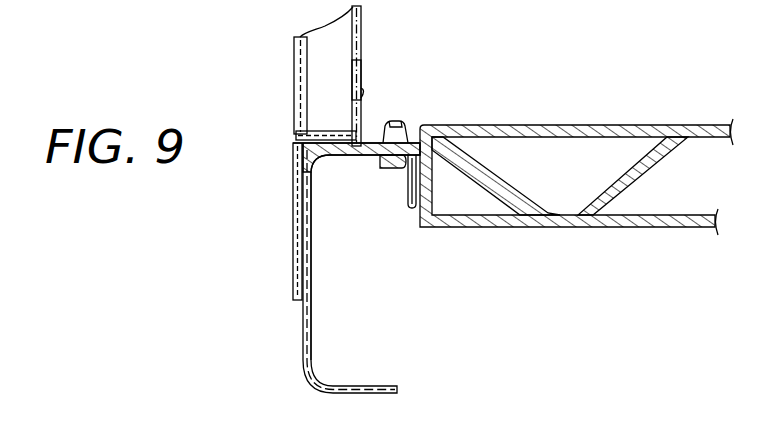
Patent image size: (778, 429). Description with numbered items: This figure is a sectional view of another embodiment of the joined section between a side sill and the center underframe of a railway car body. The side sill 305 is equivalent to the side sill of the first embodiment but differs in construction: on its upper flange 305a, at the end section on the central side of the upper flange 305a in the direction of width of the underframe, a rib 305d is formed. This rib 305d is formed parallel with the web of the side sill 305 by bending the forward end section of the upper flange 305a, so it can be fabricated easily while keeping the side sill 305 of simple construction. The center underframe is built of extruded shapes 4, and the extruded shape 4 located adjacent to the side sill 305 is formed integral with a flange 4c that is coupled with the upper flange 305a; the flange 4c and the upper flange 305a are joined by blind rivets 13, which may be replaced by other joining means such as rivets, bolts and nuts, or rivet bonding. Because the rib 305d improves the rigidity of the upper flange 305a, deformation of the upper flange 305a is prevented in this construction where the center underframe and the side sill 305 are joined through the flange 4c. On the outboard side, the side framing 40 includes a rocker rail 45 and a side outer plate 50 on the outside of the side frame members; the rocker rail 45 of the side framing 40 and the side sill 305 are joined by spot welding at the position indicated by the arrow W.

The extruded shape 4 is at (547, 125).
The flange 4c is at (374, 141).
The blind rivet 13 is at (402, 121).
The side framing 40 is at (292, 142).
The rocker rail 45 is at (363, 97).
The side outer plate 50 is at (296, 55).
The side sill 305 is at (312, 315).
The upper flange 305a is at (358, 156).
The rib 305d is at (406, 178).
The spot welding position W is at (290, 273).